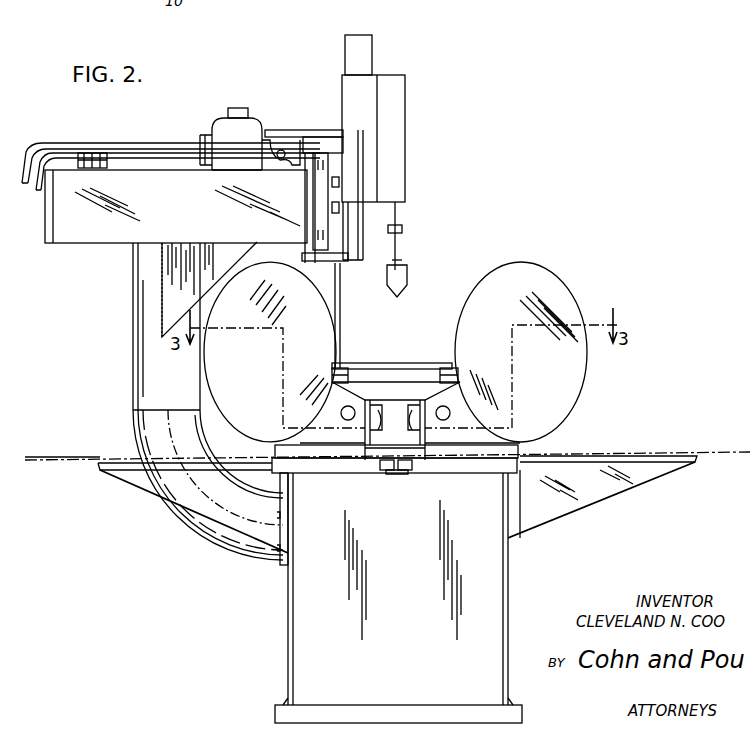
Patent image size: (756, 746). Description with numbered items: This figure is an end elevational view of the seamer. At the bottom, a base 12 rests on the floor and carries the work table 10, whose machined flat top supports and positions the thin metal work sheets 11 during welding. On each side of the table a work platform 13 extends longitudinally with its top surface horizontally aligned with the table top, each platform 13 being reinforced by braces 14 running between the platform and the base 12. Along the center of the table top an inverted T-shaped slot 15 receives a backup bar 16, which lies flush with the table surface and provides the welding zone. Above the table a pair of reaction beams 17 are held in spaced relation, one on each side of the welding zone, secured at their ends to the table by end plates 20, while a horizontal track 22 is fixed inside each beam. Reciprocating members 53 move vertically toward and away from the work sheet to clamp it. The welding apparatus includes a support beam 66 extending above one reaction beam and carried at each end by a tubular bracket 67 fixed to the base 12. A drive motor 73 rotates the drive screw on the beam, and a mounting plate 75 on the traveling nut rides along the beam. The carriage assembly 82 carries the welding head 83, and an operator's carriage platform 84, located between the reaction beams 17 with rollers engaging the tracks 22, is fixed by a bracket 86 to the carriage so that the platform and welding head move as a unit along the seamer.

The work table 10 is at (470, 466).
The work sheets 11 is at (49, 446).
The base 12 is at (505, 605).
The work platform 13 is at (108, 470).
The braces 14 is at (145, 488).
The inverted T-shaped slot 15 is at (384, 470).
The backup bar 16 is at (402, 474).
The reaction beams 17 is at (272, 262).
The end plates 20 is at (250, 440).
The horizontal track 22 is at (332, 378).
The reciprocating members 53 is at (414, 446).
The support beam 66 is at (66, 243).
The tubular bracket 67 is at (135, 376).
The drive motor 73 is at (237, 138).
The mounting plate 75 is at (148, 160).
The carriage assembly 82 is at (325, 130).
The welding head 83 is at (401, 139).
The operator's carriage platform 84 is at (370, 365).
The bracket 86 is at (341, 288).